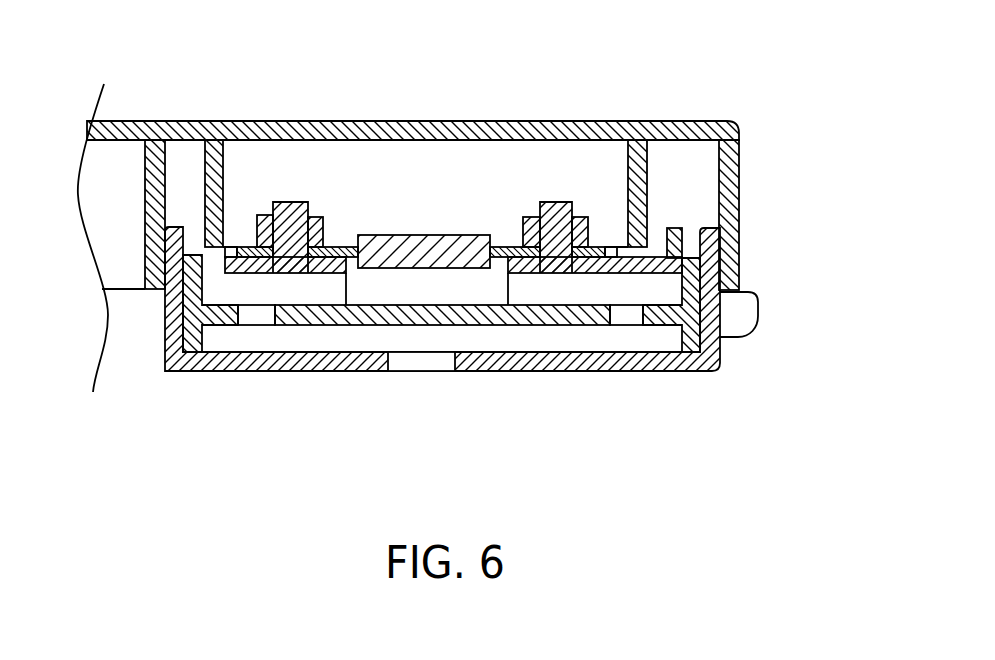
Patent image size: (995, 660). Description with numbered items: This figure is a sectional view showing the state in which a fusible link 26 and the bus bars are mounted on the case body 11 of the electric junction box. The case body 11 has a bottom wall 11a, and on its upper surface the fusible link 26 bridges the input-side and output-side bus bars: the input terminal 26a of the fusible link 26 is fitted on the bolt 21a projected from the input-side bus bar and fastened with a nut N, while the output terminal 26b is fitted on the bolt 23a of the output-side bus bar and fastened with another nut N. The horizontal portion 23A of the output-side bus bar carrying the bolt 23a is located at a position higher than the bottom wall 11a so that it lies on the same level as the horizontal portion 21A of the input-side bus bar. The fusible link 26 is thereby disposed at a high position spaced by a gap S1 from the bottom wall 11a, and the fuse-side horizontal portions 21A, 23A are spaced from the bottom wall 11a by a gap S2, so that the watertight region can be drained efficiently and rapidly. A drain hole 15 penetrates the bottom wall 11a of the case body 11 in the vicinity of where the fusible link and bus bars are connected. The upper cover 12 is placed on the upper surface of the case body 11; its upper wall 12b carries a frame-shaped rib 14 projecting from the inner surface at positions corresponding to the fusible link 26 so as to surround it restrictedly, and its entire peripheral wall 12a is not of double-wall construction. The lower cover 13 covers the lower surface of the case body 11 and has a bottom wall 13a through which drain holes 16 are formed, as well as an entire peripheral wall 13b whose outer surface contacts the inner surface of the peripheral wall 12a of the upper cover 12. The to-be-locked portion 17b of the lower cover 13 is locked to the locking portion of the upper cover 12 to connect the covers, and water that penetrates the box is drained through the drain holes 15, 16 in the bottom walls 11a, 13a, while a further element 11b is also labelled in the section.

The case body 11 is at (514, 323).
The bottom wall of the case body 11a is at (482, 327).
The yoke flange 11b is at (705, 231).
The upper cover 12 is at (461, 165).
The entire peripheral wall of the upper cover 12a is at (740, 170).
The upper wall of the upper cover 12b is at (620, 121).
The lower cover 13 is at (495, 356).
The bottom wall of the lower cover 13a is at (313, 371).
The entire peripheral wall of the lower cover 13b is at (655, 334).
The frame shaped rib 14 is at (205, 168).
The drain hole 15 is at (252, 315).
The drain hole 16 is at (423, 362).
The to-be-locked portion 17b is at (758, 311).
The bolt 21a is at (278, 203).
The horizontal portion of the input-side bus bar 21A is at (245, 268).
The bolt 23a is at (545, 203).
The horizontal portion of the output side bus bar 23A is at (592, 270).
The fusible link 26 is at (412, 237).
The input terminal of the fusible link 26a is at (330, 247).
The output terminal of the fusible link 26b is at (508, 245).
The nut N is at (267, 215).
The gap S1 is at (388, 290).
The gap S2 is at (295, 291).